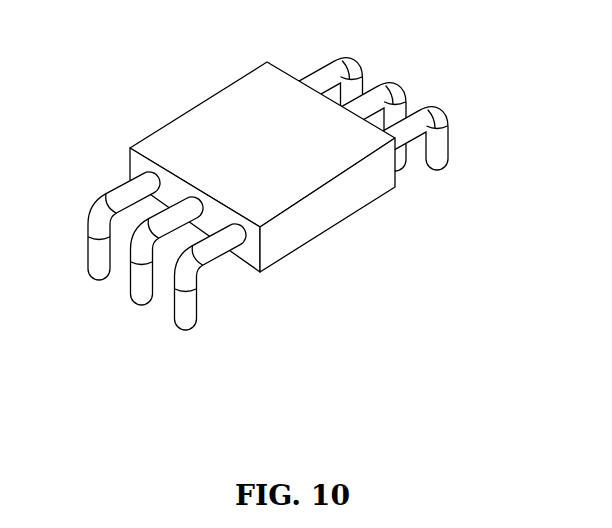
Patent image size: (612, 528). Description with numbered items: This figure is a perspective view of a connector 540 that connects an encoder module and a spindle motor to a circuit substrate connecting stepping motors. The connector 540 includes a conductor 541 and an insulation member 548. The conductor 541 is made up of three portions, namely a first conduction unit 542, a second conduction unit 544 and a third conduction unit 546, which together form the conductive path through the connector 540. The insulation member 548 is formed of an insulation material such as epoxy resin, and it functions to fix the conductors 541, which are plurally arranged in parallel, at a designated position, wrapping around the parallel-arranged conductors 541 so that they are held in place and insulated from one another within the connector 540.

The connector 540 is at (293, 202).
The insulation member 548 is at (250, 103).
The conductor 541 is at (467, 112).
The second conduction unit 544 is at (449, 152).
The third conduction unit 546 is at (255, 311).
The first conduction unit 542 is at (190, 307).